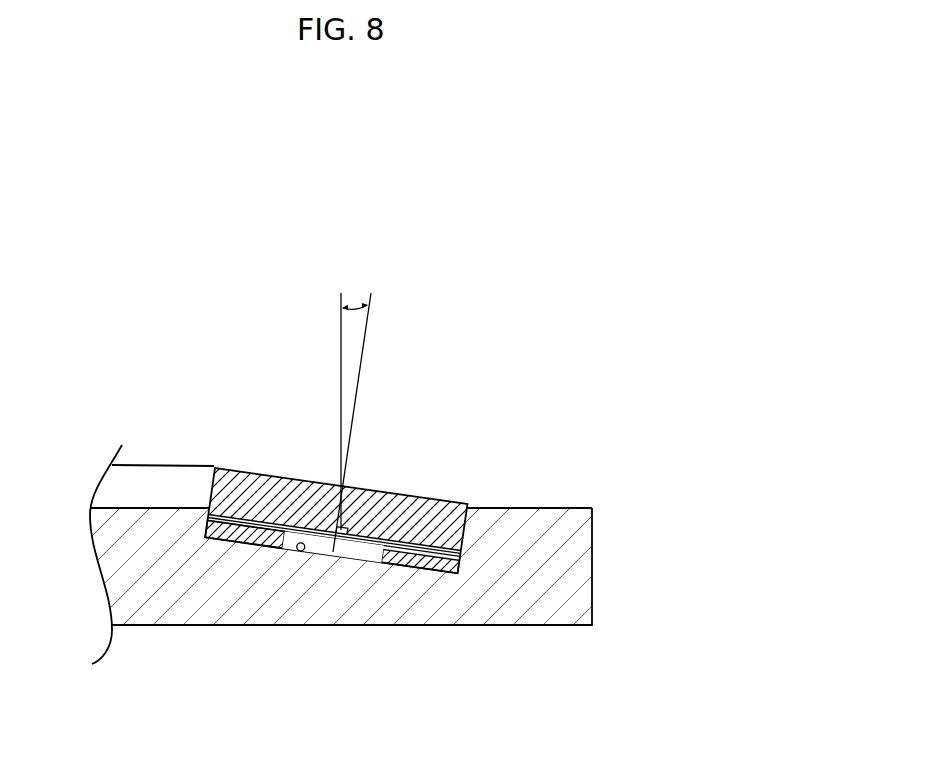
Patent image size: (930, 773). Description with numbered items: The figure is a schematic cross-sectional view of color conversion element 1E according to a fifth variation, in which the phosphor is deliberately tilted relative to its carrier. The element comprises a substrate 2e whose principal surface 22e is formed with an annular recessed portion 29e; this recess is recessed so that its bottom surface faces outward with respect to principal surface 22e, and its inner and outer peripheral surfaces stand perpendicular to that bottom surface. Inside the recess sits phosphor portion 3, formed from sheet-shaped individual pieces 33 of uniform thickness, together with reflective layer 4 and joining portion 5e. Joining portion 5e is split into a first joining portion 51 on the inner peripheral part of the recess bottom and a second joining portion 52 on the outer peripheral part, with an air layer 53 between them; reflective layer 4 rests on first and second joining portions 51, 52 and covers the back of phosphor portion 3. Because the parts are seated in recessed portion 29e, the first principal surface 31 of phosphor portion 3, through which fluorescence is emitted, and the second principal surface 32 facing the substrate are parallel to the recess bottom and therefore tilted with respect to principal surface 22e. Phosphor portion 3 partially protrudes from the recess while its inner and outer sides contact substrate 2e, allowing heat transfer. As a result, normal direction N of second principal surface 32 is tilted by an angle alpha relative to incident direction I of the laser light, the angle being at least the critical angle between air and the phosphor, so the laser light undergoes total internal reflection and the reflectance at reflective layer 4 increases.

The color conversion element 1E is at (120, 233).
The substrate 2e is at (613, 650).
The principal surface 22e is at (582, 506).
The phosphor portion 3 is at (241, 449).
The individual piece 33 is at (334, 547).
The first principal surface 31 is at (227, 465).
The second principal surface 32 is at (208, 527).
The reflective layer 4 is at (379, 541).
The joining portion 5e is at (465, 581).
The first joining portion 51 is at (237, 540).
The second joining portion 52 is at (426, 566).
The air layer 53 is at (350, 553).
The recessed portion 29e is at (303, 553).
The incident direction I is at (340, 353).
The normal direction N is at (357, 392).